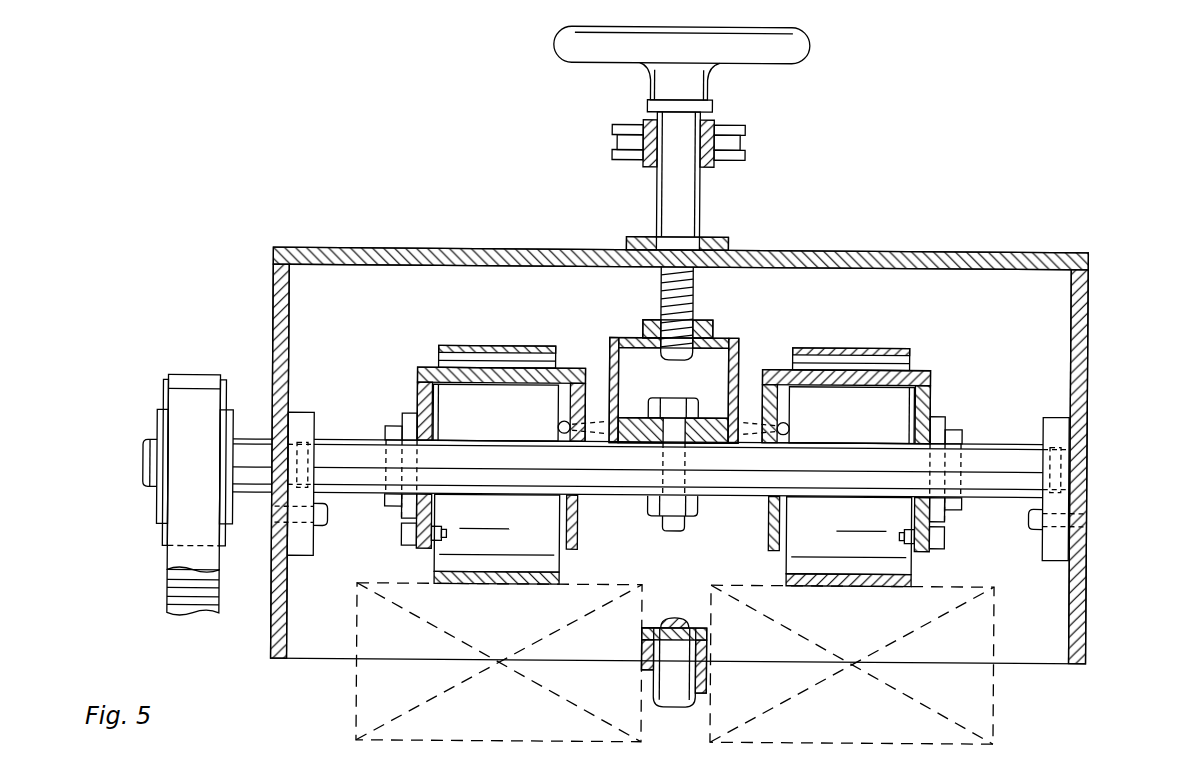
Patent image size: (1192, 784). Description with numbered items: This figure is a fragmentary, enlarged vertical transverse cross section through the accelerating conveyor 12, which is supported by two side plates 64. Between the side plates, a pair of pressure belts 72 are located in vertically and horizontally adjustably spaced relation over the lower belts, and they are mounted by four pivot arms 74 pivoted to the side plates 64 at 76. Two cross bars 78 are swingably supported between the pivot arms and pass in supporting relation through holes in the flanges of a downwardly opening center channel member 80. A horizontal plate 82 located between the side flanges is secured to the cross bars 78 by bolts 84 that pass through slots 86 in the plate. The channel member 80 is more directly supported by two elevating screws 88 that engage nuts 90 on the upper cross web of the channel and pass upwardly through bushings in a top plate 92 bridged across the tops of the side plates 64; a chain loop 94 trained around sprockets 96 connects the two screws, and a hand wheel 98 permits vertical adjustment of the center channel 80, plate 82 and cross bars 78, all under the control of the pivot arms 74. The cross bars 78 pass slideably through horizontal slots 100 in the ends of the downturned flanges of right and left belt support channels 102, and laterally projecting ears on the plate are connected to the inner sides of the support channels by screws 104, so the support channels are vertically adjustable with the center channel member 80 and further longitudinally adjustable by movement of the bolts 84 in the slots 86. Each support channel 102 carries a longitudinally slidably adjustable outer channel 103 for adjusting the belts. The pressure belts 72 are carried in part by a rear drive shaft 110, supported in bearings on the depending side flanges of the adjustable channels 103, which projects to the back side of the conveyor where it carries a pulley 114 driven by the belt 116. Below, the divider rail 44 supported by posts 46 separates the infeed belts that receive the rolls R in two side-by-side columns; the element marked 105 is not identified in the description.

The accelerating conveyor 12 is at (1103, 447).
The divider rail 44 is at (710, 655).
The posts 46 is at (688, 710).
The side plates 64 is at (1087, 363).
The pressure belts 72 is at (456, 347).
The pivot arms 74 is at (300, 418).
The pivot 76 is at (324, 527).
The cross bars 78 is at (330, 447).
The center channel member 80 is at (630, 342).
The horizontal plate 82 is at (605, 382).
The bolts 84 is at (672, 532).
The slots 86 is at (640, 425).
The elevating screws 88 is at (683, 308).
The nuts 90 is at (714, 335).
The top plate 92 is at (872, 262).
The chain loop 94 is at (747, 128).
The sprockets 96 is at (745, 148).
The hand wheel 98 is at (810, 58).
The horizontal slots 100 is at (572, 503).
The belt support channels 102 is at (438, 408).
The outer channel 103 is at (417, 372).
The screws 104 is at (784, 431).
The stud 105 is at (412, 540).
The rear drive shaft 110 is at (143, 462).
The pulley 114 is at (168, 392).
The belt 116 is at (178, 560).
The rolls R is at (840, 676).